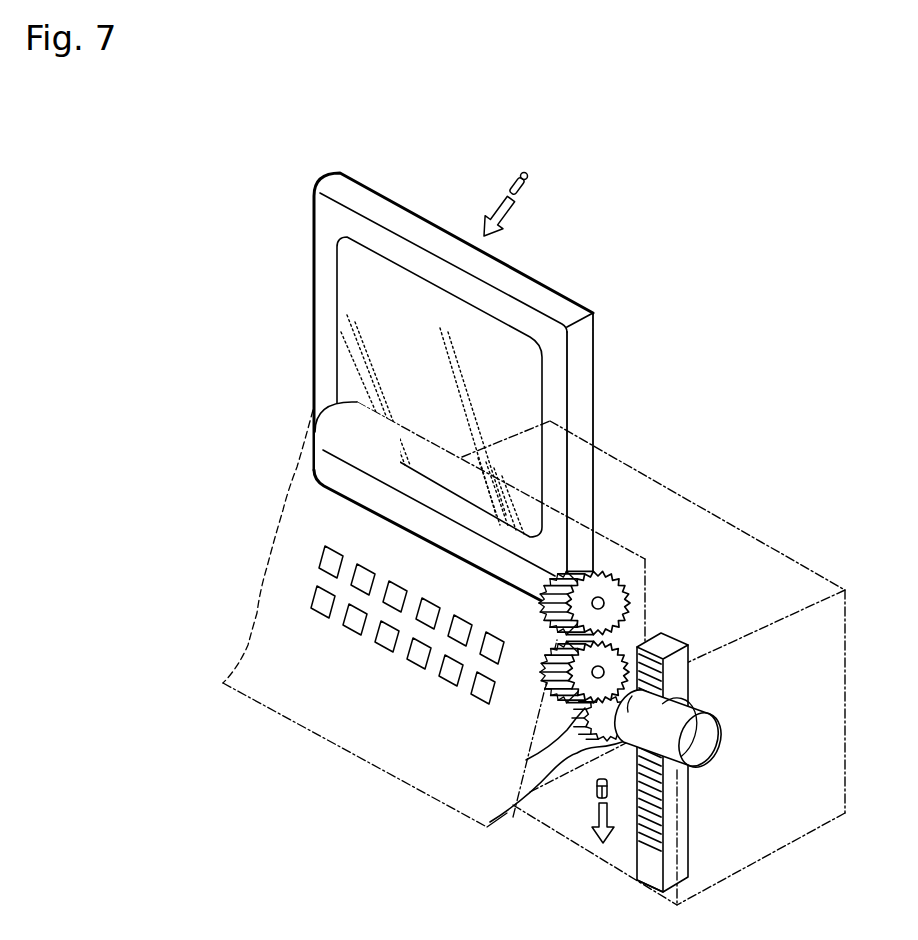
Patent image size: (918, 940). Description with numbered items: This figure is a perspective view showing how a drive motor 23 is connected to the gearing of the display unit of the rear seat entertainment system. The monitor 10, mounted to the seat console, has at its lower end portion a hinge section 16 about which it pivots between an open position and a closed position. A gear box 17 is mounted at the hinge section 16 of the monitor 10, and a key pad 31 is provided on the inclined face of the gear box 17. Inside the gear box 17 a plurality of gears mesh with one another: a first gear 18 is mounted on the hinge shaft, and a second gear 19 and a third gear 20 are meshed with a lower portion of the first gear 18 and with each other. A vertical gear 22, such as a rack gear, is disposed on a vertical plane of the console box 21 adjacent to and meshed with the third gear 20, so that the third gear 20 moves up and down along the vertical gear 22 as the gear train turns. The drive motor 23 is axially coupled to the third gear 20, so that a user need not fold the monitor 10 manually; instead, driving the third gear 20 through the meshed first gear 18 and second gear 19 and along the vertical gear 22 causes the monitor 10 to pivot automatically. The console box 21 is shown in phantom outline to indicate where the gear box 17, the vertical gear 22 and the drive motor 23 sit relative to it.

The monitor 10 is at (328, 333).
The hinge section 16 is at (358, 493).
The gear box 17 is at (363, 712).
The first gear 18 is at (610, 552).
The second gear 19 is at (573, 694).
The third gear 20 is at (532, 782).
The console box 21 is at (627, 467).
The vertical gear 22 is at (673, 632).
The drive motor 23 is at (705, 740).
The key pad 31 is at (320, 590).